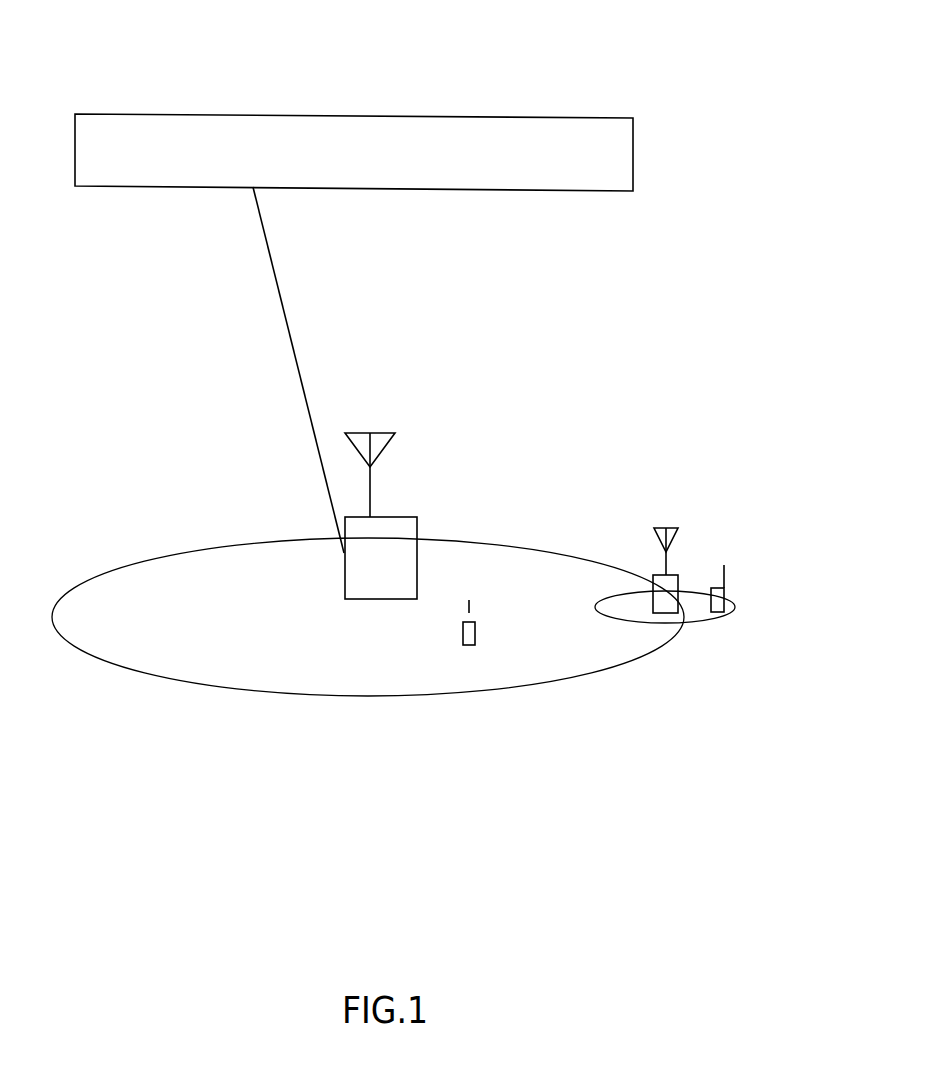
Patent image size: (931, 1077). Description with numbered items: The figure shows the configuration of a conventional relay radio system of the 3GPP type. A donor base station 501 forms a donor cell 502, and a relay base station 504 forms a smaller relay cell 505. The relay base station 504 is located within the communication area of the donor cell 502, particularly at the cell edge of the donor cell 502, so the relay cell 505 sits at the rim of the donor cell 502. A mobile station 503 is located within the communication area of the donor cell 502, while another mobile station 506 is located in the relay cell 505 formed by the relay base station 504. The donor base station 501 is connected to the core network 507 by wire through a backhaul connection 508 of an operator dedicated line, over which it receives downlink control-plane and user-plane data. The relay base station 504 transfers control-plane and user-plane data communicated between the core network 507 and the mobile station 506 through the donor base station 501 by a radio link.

The donor base station 501 is at (380, 423).
The donor cell 502 is at (233, 690).
The mobile station 503 is at (477, 590).
The relay base station 504 is at (665, 525).
The relay cell 505 is at (688, 623).
The mobile station 506 is at (733, 553).
The core network 507 is at (353, 115).
The backhaul connection 508 is at (273, 235).